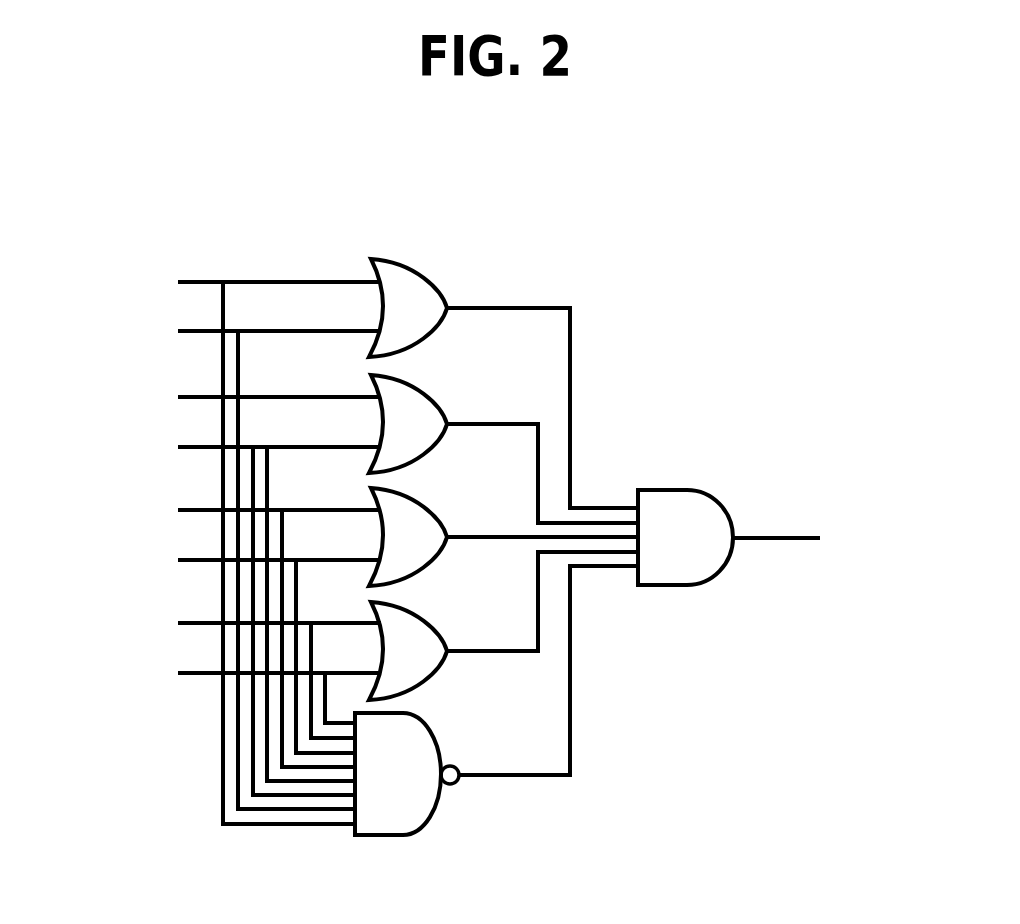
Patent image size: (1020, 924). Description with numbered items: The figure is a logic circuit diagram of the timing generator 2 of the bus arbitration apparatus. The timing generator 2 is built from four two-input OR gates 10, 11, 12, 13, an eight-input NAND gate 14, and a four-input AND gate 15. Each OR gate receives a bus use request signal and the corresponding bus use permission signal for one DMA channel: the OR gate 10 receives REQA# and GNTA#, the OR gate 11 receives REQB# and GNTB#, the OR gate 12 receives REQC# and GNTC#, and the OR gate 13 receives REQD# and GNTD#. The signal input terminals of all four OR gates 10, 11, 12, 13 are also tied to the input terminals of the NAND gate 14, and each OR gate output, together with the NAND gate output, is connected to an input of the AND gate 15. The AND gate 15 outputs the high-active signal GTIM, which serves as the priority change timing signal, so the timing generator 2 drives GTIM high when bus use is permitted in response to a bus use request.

The timing generator 2 is at (405, 231).
The 2-input OR gate 10 is at (418, 262).
The 2-input OR gate 11 is at (418, 378).
The 2-input OR gate 12 is at (420, 576).
The 2-input OR gate 13 is at (418, 690).
The 8-input NAND gate 14 is at (417, 826).
The 4-input AND gate 15 is at (678, 490).